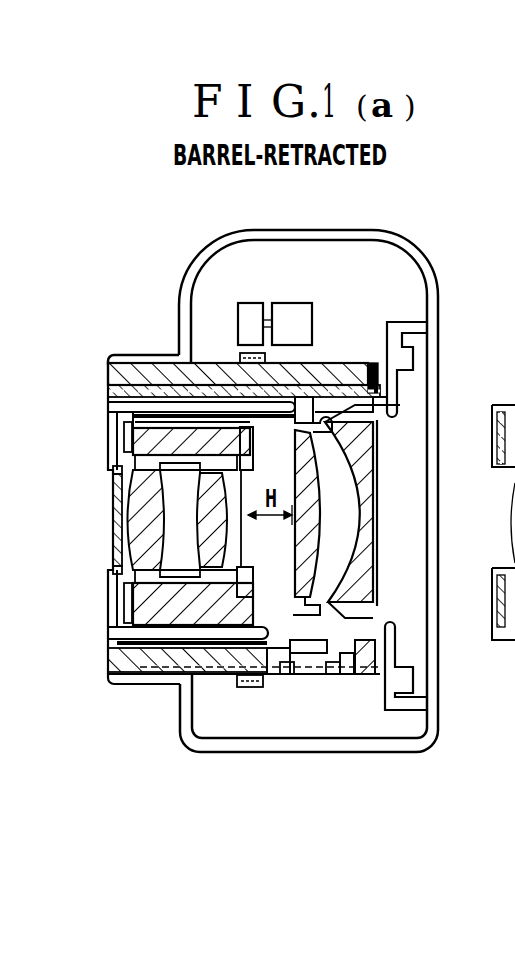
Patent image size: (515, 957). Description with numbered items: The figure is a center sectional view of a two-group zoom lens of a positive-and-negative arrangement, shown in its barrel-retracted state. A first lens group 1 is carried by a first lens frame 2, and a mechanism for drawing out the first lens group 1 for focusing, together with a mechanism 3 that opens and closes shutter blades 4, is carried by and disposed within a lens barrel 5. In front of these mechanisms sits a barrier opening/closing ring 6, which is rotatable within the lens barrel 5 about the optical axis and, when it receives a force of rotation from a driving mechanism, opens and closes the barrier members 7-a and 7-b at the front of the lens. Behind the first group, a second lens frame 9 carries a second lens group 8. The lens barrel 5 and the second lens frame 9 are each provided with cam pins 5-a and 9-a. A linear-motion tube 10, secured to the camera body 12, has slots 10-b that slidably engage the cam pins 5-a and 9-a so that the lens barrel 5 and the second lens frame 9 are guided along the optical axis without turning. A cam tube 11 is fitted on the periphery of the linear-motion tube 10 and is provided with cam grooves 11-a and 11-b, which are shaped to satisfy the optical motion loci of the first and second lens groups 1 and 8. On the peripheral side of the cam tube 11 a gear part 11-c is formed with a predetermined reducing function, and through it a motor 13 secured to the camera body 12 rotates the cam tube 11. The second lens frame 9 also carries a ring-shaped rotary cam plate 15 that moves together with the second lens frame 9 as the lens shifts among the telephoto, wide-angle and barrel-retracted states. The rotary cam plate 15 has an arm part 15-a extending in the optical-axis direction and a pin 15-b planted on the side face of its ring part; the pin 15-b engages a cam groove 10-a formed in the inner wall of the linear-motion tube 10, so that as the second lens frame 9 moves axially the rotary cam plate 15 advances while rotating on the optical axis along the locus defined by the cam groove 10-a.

The first lens group 1 is at (112, 530).
The first lens frame 2 is at (157, 612).
The mechanism 3 is at (228, 585).
The shutter blades 4 is at (256, 547).
The lens barrel 5 is at (212, 600).
The cam pins 5-a is at (270, 613).
The barrier opening/closing ring 6 is at (128, 418).
The barrier member 7-a is at (112, 495).
The barrier member 7-b is at (112, 540).
The second lens group 8 is at (330, 520).
The second lens frame 9 is at (380, 613).
The cam pins 9-a is at (347, 674).
The linear-motion tube 10 is at (156, 418).
The cam groove 10-a is at (218, 386).
The slots 10-b is at (198, 598).
The cam tube 11 is at (127, 660).
The cam groove 11-a is at (288, 682).
The cam groove 11-b is at (333, 684).
The gear part 11-c is at (275, 357).
The camera body 12 is at (313, 232).
The motor 13 is at (318, 297).
The rotary cam plate 15 is at (330, 426).
The arm part 15-a is at (136, 410).
The pin 15-b is at (385, 397).